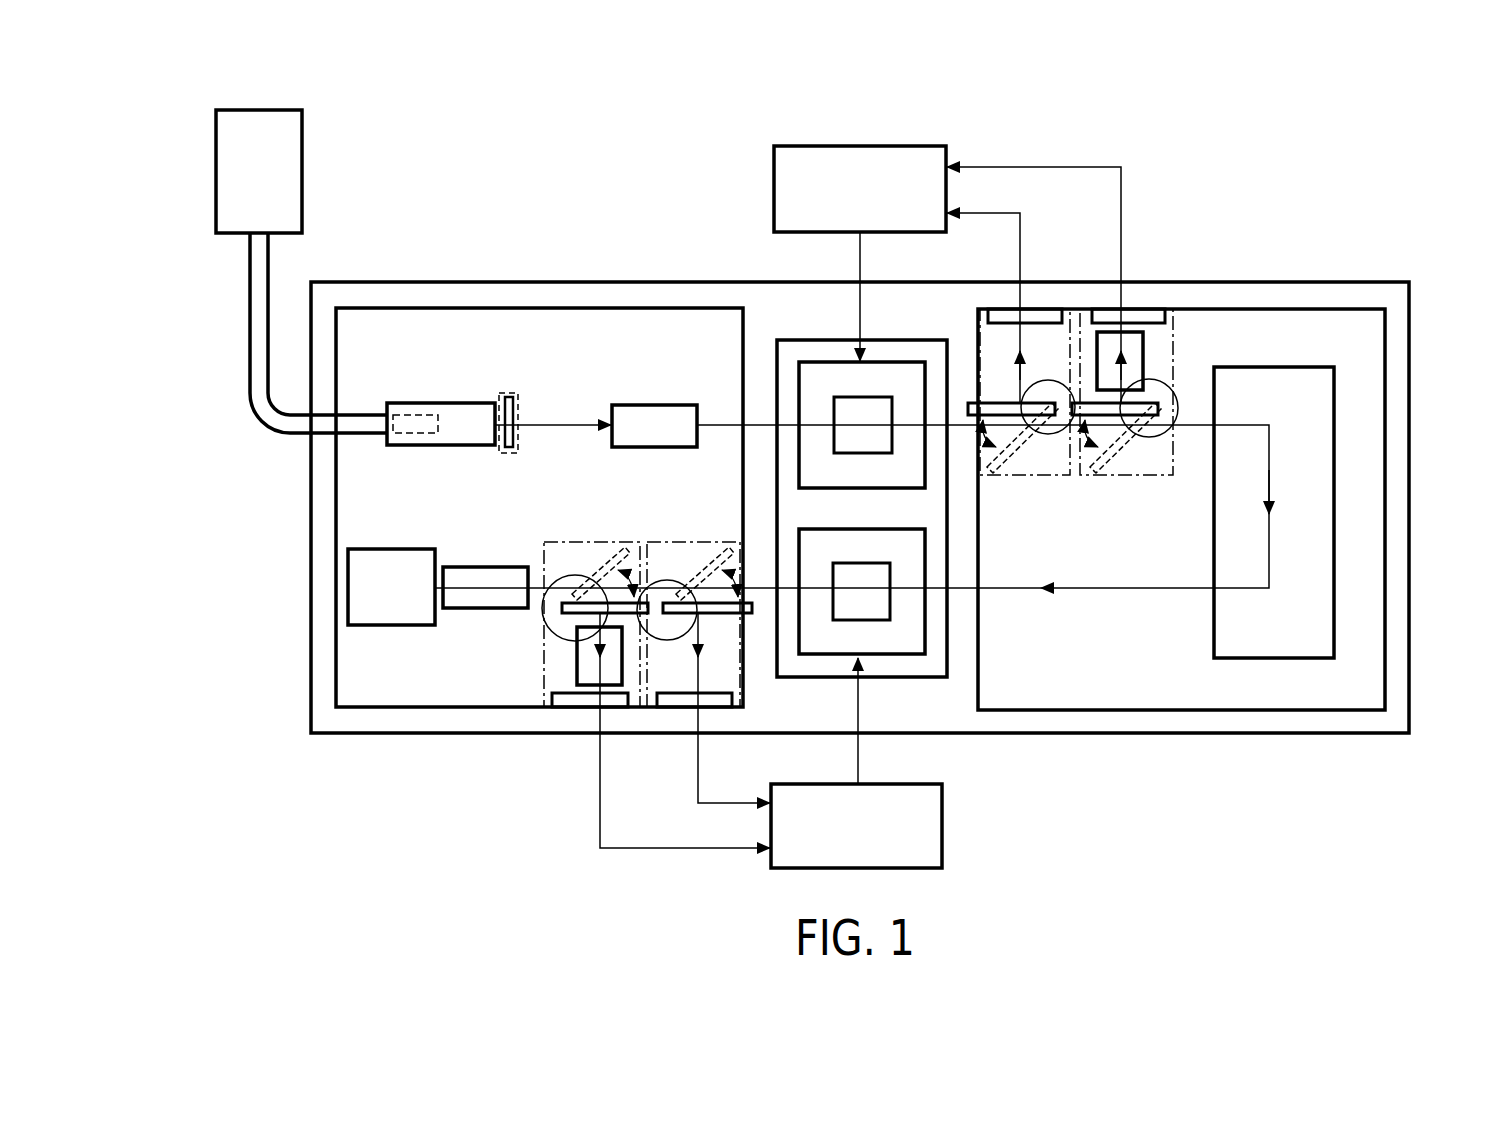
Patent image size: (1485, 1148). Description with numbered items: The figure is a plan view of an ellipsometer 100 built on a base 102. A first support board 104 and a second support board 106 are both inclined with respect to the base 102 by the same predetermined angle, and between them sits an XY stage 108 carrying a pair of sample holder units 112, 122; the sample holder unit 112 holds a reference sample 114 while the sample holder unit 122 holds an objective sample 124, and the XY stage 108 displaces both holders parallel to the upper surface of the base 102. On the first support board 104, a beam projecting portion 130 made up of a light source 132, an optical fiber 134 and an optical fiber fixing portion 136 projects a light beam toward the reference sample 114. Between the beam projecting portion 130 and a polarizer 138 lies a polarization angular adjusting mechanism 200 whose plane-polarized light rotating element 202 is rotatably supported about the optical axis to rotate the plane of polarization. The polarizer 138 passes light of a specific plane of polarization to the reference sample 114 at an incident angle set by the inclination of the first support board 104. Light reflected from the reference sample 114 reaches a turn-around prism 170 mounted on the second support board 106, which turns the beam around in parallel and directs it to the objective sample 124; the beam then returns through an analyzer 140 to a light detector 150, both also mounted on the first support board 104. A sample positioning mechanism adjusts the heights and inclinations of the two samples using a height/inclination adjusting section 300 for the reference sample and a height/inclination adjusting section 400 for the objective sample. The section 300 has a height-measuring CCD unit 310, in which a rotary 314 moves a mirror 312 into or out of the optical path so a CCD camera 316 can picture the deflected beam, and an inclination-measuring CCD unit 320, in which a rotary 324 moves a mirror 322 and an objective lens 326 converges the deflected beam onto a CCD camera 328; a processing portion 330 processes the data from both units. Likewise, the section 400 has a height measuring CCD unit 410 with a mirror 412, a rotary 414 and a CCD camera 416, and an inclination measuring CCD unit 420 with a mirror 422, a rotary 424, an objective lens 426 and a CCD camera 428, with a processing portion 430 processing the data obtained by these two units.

The ellipsometer 100 is at (646, 169).
The base 102 is at (622, 281).
The first support board 104 is at (440, 306).
The second support board 106 is at (1312, 308).
The XY stage 108 is at (934, 678).
The sample holder unit 112 is at (893, 362).
The reference sample 114 is at (838, 397).
The sample holder unit 122 is at (822, 655).
The objective sample 124 is at (870, 621).
The beam projecting portion 130 is at (299, 450).
The light source 132 is at (302, 168).
The optical fiber 134 is at (262, 426).
The optical fiber fixing portion 136 is at (415, 403).
The polarizer 138 is at (650, 405).
The analyzer 140 is at (488, 567).
The light detector 150 is at (392, 549).
The turn-around prism 170 is at (1213, 628).
The polarization angular adjusting mechanism 200 is at (508, 392).
The plane-polarized light rotating element 202 is at (550, 392).
The height/inclination adjusting section 300 is at (1091, 511).
The height-measuring CCD unit 310 is at (1005, 477).
The mirror 312 is at (993, 402).
The rotary 314 is at (1048, 440).
The CCD camera 316 is at (1040, 309).
The inclination-measuring CCD unit 320 is at (1173, 477).
The mirror 322 is at (1128, 440).
The rotary 324 is at (1176, 395).
The objective lens 326 is at (1144, 345).
The CCD camera 328 is at (1150, 309).
The processing portion 330 is at (772, 190).
The height/inclination adjusting section 400 is at (634, 519).
The height measuring CCD unit 410 is at (705, 541).
The mirror 412 is at (719, 615).
The rotary 414 is at (662, 640).
The CCD camera 416 is at (673, 708).
The inclination measuring CCD unit 420 is at (598, 541).
The mirror 422 is at (613, 600).
The rotary 424 is at (545, 616).
The objective lens 426 is at (577, 652).
The CCD camera 428 is at (578, 708).
The processing portion 430 is at (944, 825).